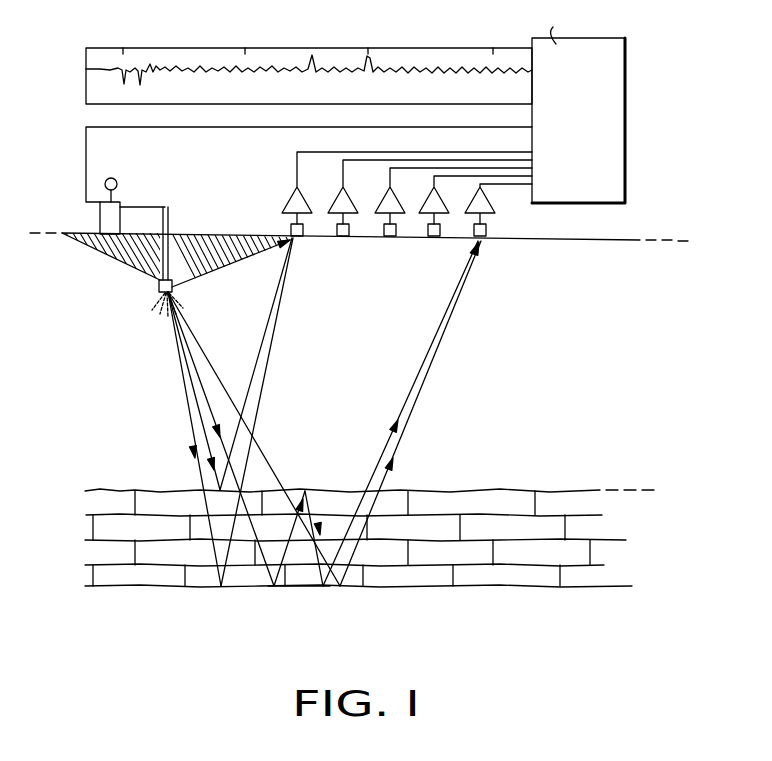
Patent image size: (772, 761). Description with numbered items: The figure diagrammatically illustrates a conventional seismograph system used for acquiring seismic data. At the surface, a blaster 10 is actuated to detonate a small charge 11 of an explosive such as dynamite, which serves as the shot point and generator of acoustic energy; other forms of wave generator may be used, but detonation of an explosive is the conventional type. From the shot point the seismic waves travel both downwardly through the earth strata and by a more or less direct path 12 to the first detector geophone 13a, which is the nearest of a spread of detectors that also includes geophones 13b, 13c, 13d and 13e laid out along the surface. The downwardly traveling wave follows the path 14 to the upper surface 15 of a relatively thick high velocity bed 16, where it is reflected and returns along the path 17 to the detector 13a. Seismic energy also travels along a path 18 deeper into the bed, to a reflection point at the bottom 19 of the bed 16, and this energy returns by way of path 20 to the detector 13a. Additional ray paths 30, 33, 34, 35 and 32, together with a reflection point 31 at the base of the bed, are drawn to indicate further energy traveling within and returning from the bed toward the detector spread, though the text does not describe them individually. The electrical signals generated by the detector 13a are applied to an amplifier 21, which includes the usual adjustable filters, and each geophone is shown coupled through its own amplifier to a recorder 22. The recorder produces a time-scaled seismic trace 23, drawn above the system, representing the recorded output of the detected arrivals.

The blaster 10 is at (100, 222).
The charge 11 is at (160, 291).
The direct path 12 is at (204, 268).
The first detector geophone 13a is at (290, 231).
The detector geophone 13b is at (334, 240).
The detector geophone 13c is at (382, 240).
The detector geophone 13d is at (426, 240).
The detector geophone 13e is at (487, 240).
The path 14 is at (196, 409).
The upper surface 15 is at (121, 490).
The high velocity bed 16 is at (336, 538).
The path 17 is at (253, 388).
The path 18 is at (192, 443).
The bottom 19 is at (180, 584).
The path 20 is at (258, 421).
The amplifier 21 is at (291, 198).
The recorder 22 is at (627, 112).
The recorded seismic trace 23 is at (306, 18).
The downgoing ray to reflection point 31 30 is at (200, 380).
The reflection point at bottom of layer 31 is at (285, 588).
The internal multiple downgoing ray 32 is at (318, 508).
The primary reflected ray to geophone 13e 33 is at (416, 401).
The internal multiple upgoing ray 34 is at (273, 491).
The multiple reflected ray to geophone 13e 35 is at (401, 412).